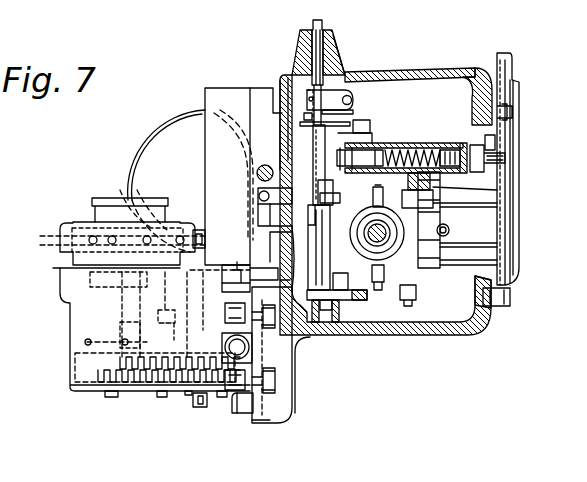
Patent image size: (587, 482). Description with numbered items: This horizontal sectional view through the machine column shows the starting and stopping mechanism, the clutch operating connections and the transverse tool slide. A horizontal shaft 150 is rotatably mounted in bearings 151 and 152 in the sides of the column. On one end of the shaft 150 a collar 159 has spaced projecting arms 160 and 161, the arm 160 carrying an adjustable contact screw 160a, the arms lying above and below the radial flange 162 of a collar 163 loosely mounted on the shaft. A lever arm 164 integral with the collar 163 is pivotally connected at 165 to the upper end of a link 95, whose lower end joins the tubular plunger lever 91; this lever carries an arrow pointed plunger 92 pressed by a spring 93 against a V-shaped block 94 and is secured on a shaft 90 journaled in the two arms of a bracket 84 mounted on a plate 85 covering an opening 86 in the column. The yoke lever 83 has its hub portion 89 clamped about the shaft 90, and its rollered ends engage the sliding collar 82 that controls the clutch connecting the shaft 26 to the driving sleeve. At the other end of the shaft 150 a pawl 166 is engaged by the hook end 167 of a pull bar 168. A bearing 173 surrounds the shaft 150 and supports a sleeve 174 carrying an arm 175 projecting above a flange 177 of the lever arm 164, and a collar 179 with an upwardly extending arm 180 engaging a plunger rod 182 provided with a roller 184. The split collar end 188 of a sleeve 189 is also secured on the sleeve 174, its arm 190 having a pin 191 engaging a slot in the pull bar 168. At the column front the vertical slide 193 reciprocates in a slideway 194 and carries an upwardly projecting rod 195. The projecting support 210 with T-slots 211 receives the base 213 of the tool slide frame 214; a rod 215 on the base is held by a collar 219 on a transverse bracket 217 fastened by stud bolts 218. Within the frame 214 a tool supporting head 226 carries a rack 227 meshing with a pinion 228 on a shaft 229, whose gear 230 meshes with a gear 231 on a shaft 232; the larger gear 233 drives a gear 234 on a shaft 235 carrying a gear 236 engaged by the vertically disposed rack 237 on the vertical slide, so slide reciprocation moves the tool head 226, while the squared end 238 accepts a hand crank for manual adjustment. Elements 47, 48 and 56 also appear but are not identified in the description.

The shaft 26 is at (376, 233).
The pivot pin 47 is at (282, 160).
The housing wall 48 is at (284, 140).
The circular path 56 is at (150, 142).
The sliding collar 82 is at (383, 200).
The yoke lever 83 is at (380, 282).
The bracket 84 is at (458, 266).
The plate 85 is at (513, 250).
The opening 86 is at (492, 305).
The hub portion 89 is at (441, 250).
The shaft 90 is at (415, 297).
The plunger lever 91 is at (392, 150).
The plunger 92 is at (463, 150).
The spring 93 is at (418, 146).
The V-shaped block 94 is at (484, 158).
The link 95 is at (366, 127).
The horizontal shaft 150 is at (322, 53).
The bearing 151 is at (350, 326).
The bearing 152 is at (342, 45).
The collar 159 is at (337, 68).
The projecting arm 160 is at (372, 78).
The adjustable contact screw 160a is at (414, 77).
The projecting arm 161 is at (336, 205).
The radial flange 162 is at (353, 98).
The collar 163 is at (304, 116).
The lever arm 164 is at (346, 114).
The pivotal connection 165 is at (372, 138).
The pawl 166 is at (313, 338).
The hook end 167 is at (336, 338).
The pull bar 168 is at (382, 330).
The bearing 173 is at (331, 176).
The sleeve 174 is at (273, 244).
The arm 175 is at (304, 126).
The flange 177 is at (360, 147).
The collar 179 is at (284, 274).
The arm 180 is at (318, 224).
The plunger rod 182 is at (266, 212).
The roller 184 is at (258, 196).
The split collar end 188 is at (333, 280).
The sleeve 189 is at (275, 303).
The arm 190 is at (342, 292).
The pin 191 is at (340, 322).
The vertical slide 193 is at (212, 107).
The slideway 194 is at (270, 110).
The rod 195 is at (256, 162).
The projecting support 210 is at (274, 414).
The T-slots 211 is at (295, 410).
The base 213 is at (250, 415).
The tool slide frame 214 is at (73, 321).
The vertically extending rod 215 is at (196, 400).
The transverse bracket 217 is at (238, 408).
The stud bolts 218 is at (258, 332).
The collar 219 is at (188, 394).
The tool supporting head 226 is at (102, 198).
The rack 227 is at (119, 236).
The pinion 228 is at (160, 200).
The shaft 229 is at (125, 307).
The gear 230 is at (102, 396).
The gear 231 is at (150, 393).
The shaft 232 is at (165, 310).
The larger gear 233 is at (176, 355).
The gear 234 is at (228, 340).
The shaft 235 is at (236, 307).
The gear 236 is at (199, 230).
The vertically disposed rack 237 is at (238, 264).
The squared end 238 is at (201, 406).